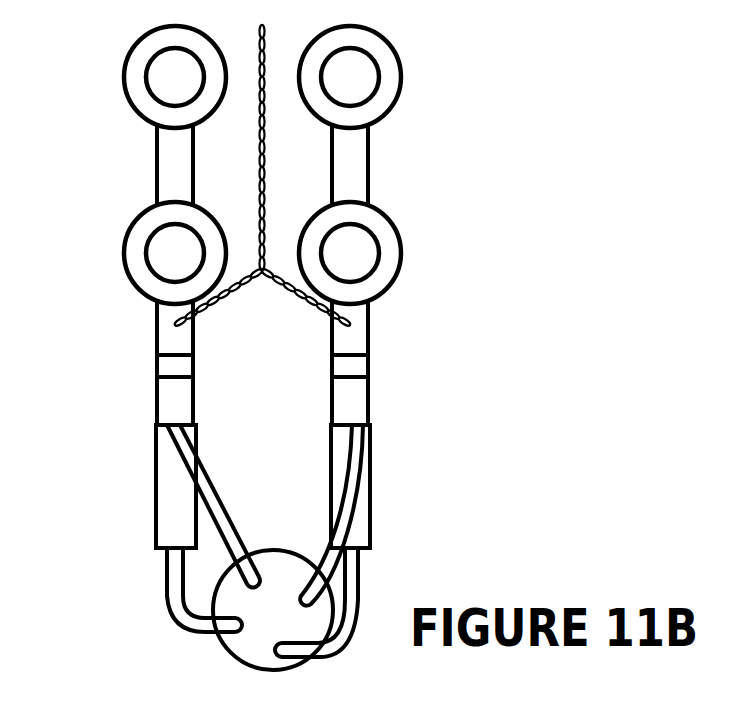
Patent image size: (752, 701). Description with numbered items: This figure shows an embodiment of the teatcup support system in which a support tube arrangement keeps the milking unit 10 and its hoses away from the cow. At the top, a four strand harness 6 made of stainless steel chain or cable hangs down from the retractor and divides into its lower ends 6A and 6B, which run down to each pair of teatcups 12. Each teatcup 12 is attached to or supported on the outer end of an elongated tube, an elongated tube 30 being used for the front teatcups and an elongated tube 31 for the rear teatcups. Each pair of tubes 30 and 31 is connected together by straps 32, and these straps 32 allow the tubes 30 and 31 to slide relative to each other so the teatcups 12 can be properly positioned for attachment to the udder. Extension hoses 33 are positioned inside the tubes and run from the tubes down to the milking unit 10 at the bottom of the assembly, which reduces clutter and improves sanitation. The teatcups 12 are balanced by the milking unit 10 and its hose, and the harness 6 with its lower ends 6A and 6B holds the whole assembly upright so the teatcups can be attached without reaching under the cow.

The teatcup 12 is at (123, 72).
The four strand harness 6 is at (272, 105).
The lower end of harness 6A is at (253, 281).
The lower end of harness 6B is at (267, 281).
The strap 32 is at (157, 358).
The elongated tube for rear teatcups 31 is at (157, 380).
The elongated tube for front teatcups 30 is at (158, 478).
The extension hose 33 is at (193, 595).
The milking unit 10 is at (230, 657).